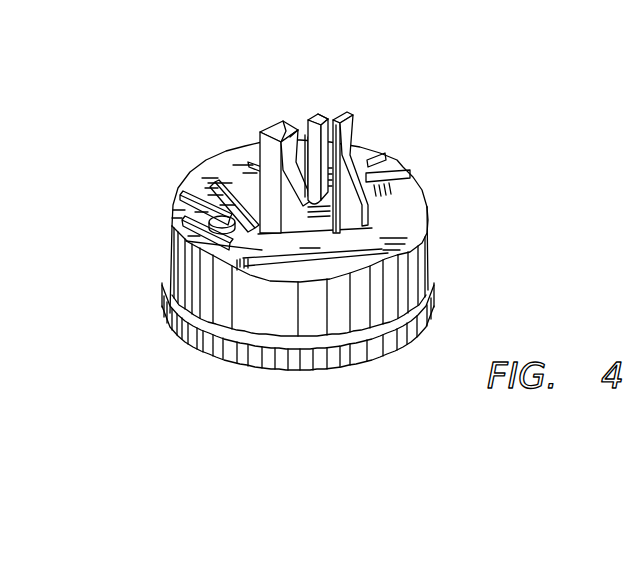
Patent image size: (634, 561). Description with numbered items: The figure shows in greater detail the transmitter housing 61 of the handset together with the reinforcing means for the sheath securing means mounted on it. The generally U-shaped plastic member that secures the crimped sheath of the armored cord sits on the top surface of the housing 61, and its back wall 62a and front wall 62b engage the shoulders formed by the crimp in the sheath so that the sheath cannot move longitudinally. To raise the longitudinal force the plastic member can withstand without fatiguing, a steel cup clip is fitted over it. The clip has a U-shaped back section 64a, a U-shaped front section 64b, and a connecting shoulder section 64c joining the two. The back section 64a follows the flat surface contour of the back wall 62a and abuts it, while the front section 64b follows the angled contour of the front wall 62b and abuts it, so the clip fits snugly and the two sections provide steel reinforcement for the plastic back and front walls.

The transmitter housing 61 is at (389, 291).
The back wall 62a is at (304, 124).
The front wall 62b is at (314, 200).
The back section 64a is at (316, 112).
The front section 64b is at (333, 133).
The connecting shoulder section 64c is at (325, 114).